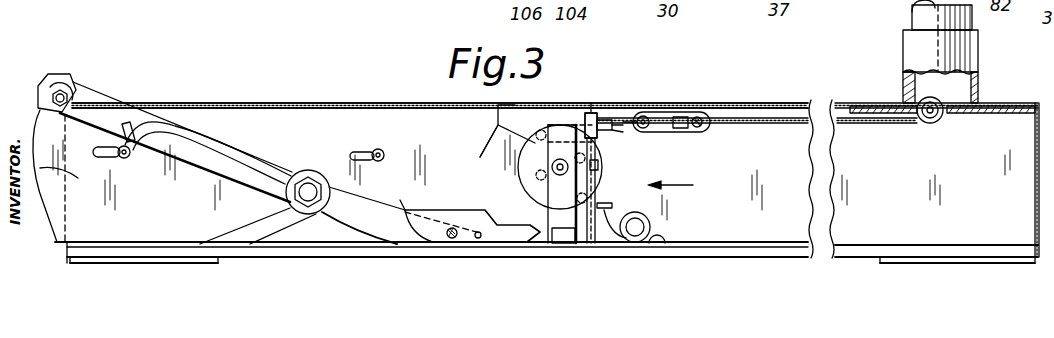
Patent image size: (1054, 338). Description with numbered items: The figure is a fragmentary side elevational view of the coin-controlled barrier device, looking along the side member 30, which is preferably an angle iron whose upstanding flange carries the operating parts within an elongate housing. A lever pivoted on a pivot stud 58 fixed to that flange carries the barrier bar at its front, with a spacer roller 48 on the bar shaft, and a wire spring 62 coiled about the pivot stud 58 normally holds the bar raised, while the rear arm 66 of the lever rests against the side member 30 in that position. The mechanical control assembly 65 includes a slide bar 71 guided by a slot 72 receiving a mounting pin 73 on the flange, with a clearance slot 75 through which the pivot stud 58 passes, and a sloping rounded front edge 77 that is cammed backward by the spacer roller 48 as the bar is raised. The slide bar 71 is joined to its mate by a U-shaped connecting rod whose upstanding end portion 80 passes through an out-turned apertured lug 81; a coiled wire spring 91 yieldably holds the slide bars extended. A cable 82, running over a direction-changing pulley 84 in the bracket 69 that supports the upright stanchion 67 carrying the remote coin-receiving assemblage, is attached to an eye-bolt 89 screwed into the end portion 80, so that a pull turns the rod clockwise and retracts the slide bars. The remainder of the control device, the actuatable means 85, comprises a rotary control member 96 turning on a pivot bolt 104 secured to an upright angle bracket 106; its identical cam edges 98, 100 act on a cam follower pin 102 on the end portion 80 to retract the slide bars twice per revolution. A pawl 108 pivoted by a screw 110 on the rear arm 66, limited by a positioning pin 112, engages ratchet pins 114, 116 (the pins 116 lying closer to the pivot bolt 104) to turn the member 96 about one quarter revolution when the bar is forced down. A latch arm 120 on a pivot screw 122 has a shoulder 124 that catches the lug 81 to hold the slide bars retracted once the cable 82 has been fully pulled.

The side member 30 is at (784, 241).
The spacer roller 48 is at (72, 92).
The pivot stud 58 is at (310, 188).
The wire spring 62 is at (258, 137).
The mechanical control assembly 65 is at (350, 122).
The rear arm 66 is at (400, 210).
The upright stanchion 67 is at (915, 22).
The bracket 69 is at (972, 50).
The slide bar 71 is at (403, 122).
The slot 72 is at (108, 158).
The mounting pin 73 is at (128, 158).
The clearance slot 75 is at (286, 186).
The rounded front edge 77 is at (95, 188).
The upstanding end portion 80 is at (595, 118).
The out-turned apertured lug 81 is at (612, 123).
The cable 82 is at (786, 124).
The direction-changing pulley 84 is at (937, 122).
The actuatable means 85 is at (683, 187).
The eye-bolt 89 is at (660, 112).
The coiled wire spring 91 is at (648, 221).
The rotary control member 96 is at (515, 143).
The cam edge 98 is at (612, 205).
The cam edge 100 is at (518, 118).
The cam follower pin 102 is at (597, 166).
The pivot bolt 104 is at (552, 167).
The upright angle bracket 106 is at (557, 213).
The pawl 108 is at (405, 226).
The screw 110 is at (450, 228).
The positioning pin 112 is at (477, 231).
The ratchet pin 114 is at (546, 123).
The ratchet pin 116 is at (536, 177).
The latch arm 120 is at (561, 135).
The pivot screw 122 is at (705, 130).
The shoulder 124 is at (616, 131).